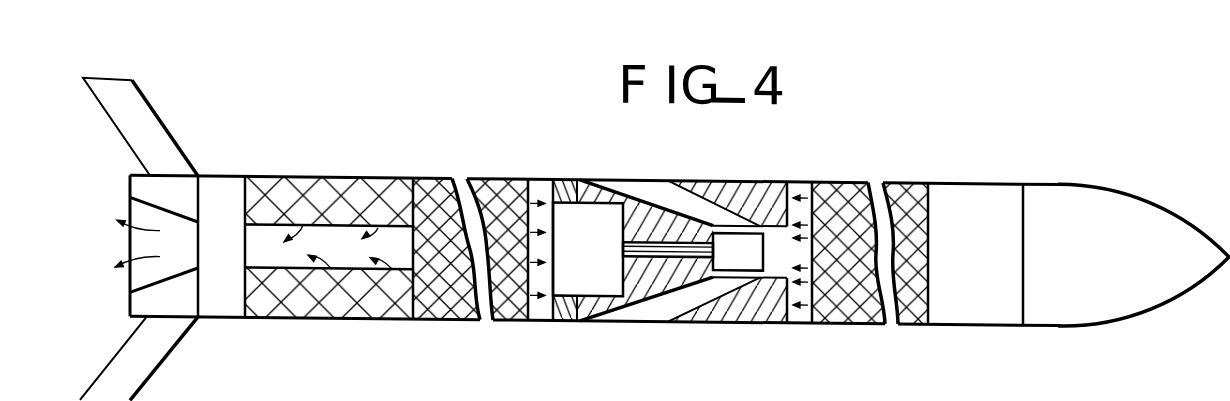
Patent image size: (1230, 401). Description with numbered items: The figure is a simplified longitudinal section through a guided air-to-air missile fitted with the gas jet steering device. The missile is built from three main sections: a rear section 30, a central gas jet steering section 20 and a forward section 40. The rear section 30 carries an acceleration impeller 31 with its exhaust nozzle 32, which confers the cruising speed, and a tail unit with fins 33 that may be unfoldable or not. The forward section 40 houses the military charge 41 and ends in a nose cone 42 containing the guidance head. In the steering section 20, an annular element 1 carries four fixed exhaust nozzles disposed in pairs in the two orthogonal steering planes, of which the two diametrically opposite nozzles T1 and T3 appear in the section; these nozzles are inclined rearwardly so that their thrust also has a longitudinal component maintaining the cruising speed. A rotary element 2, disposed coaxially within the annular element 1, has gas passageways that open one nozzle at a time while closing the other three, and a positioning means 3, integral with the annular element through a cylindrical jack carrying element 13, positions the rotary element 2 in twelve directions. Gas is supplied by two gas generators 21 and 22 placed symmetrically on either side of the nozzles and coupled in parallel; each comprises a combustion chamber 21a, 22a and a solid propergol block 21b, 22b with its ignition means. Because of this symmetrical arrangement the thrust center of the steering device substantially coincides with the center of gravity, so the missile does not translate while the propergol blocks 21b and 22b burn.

The annular element 1 is at (750, 302).
The rotary element 2 is at (733, 251).
The positioning means 3 is at (572, 277).
The cylindrical jack carrying element 13 is at (566, 172).
The gas jet steering section 20 is at (715, 153).
The gas generator 21 is at (437, 179).
The combustion chamber 21a is at (540, 182).
The solid propergol block 21b is at (508, 313).
The gas generator 22 is at (870, 291).
The combustion chamber 22a is at (800, 309).
The solid propergol block 22b is at (867, 314).
The rear section 30 is at (322, 145).
The acceleration impeller 31 is at (340, 180).
The exhaust nozzle 32 is at (142, 277).
The fins 33 is at (143, 115).
The forward section 40 is at (1048, 153).
The military charge 41 is at (970, 180).
The nose cone 42 is at (1130, 192).
The exhaust nozzle T1 is at (620, 182).
The exhaust nozzle T3 is at (653, 306).